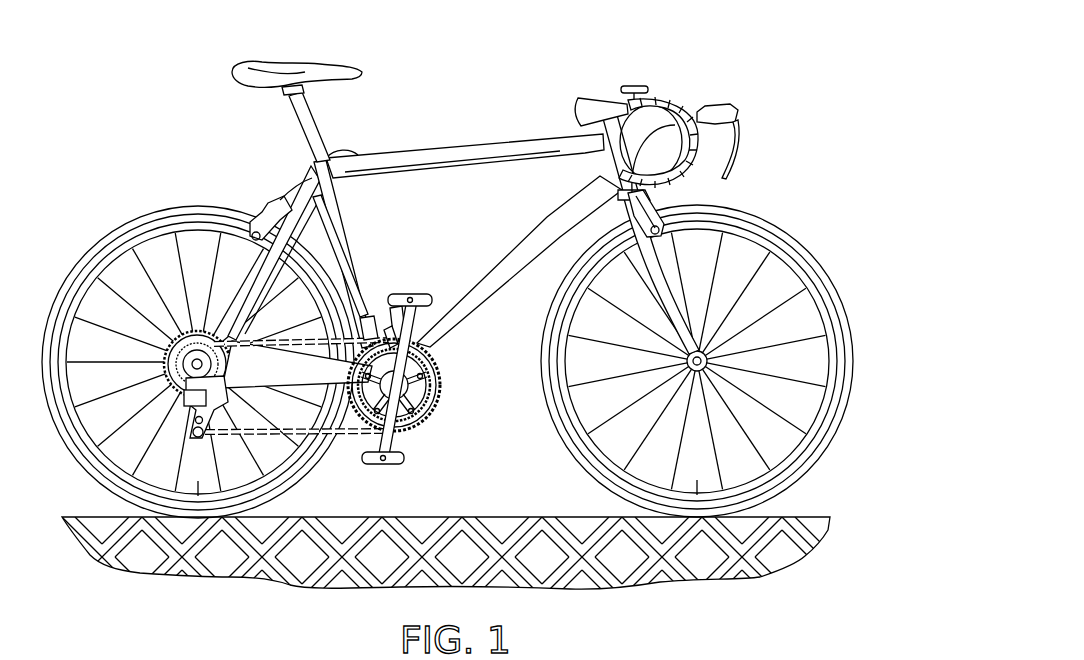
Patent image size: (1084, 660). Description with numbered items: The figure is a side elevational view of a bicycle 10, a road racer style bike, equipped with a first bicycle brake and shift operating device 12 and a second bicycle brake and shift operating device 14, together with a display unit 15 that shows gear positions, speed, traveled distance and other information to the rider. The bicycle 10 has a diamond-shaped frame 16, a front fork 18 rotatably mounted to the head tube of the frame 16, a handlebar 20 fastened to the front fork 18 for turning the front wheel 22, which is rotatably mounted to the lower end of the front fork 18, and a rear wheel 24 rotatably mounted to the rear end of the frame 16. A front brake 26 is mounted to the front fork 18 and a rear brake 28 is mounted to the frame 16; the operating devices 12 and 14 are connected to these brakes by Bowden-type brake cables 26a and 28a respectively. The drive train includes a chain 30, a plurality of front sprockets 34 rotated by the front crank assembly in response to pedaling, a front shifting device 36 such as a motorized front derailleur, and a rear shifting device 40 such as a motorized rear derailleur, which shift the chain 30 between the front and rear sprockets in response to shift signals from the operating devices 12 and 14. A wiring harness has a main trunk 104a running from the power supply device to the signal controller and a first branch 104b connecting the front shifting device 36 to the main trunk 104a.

The bicycle 10 is at (660, 31).
The first bicycle brake and shift operating device 12 is at (718, 141).
The second bicycle brake and shift operating device 14 is at (756, 114).
The display unit 15 is at (630, 86).
The frame 16 is at (452, 172).
The front fork 18 is at (671, 302).
The handlebar 20 is at (640, 107).
The front wheel 22 is at (800, 245).
The rear wheel 24 is at (114, 228).
The front brake 26 is at (661, 200).
The brake cable 26a is at (675, 124).
The rear brake 28 is at (268, 207).
The brake cable 28a is at (297, 186).
The chain 30 is at (344, 432).
The front sprockets 34 is at (442, 378).
The front shifting device 36 is at (404, 326).
The rear shifting device 40 is at (196, 441).
The main trunk 104a is at (180, 395).
The first branch 104b is at (343, 251).